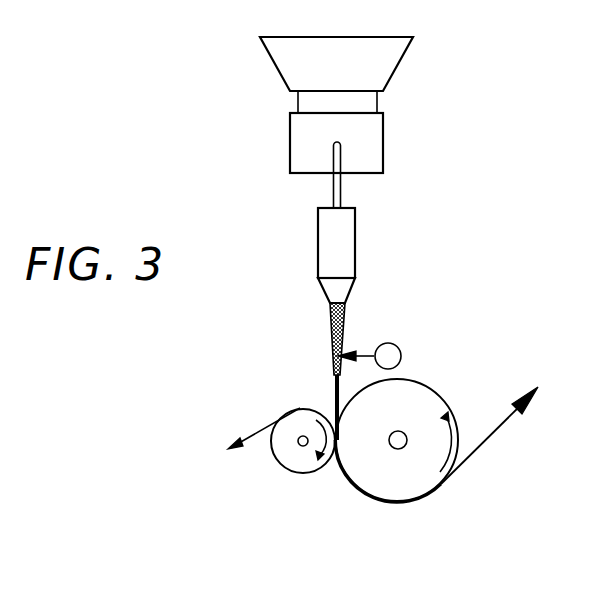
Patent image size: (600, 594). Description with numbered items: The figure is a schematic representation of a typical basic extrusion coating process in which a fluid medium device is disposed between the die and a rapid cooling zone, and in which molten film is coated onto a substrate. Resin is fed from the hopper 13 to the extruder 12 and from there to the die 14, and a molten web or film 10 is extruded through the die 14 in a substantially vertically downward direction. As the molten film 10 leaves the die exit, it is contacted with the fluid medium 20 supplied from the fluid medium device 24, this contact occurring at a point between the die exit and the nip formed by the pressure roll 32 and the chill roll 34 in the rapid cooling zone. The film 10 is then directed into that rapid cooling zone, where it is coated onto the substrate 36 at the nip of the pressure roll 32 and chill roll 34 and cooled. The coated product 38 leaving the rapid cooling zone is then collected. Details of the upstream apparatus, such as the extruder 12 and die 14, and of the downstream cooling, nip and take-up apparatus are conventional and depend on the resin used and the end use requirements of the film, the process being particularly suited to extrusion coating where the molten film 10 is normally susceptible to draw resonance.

The molten film 10 is at (333, 383).
The extruder 12 is at (383, 148).
The hopper 13 is at (400, 67).
The die 14 is at (355, 243).
The fluid medium 20 is at (369, 352).
The fluid medium device 24 is at (401, 352).
The pressure roll 32 is at (285, 458).
The chill roll 34 is at (442, 405).
The substrate 36 is at (265, 428).
The coated product 38 is at (472, 455).